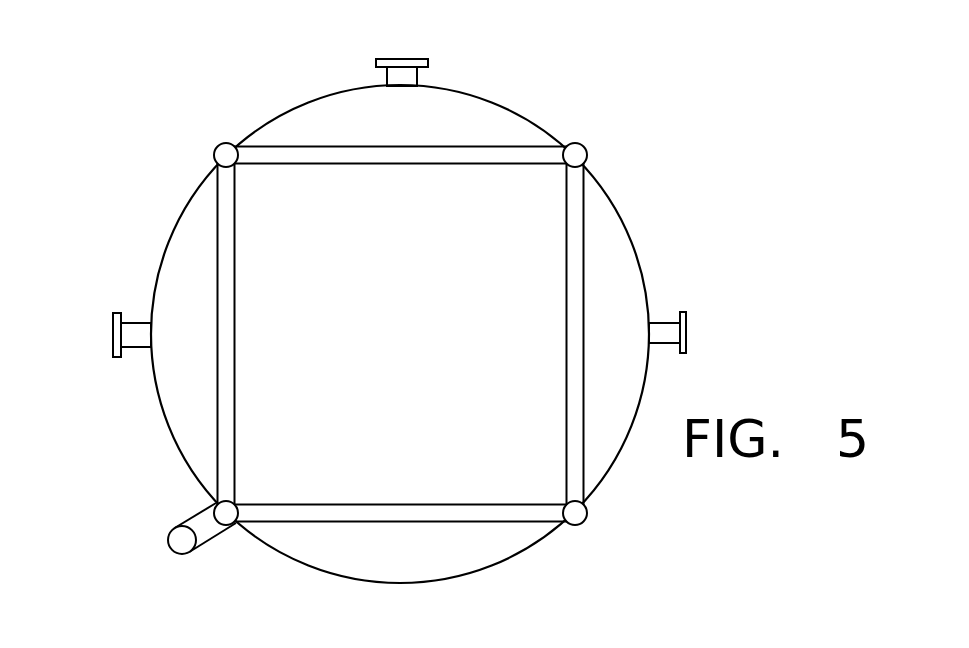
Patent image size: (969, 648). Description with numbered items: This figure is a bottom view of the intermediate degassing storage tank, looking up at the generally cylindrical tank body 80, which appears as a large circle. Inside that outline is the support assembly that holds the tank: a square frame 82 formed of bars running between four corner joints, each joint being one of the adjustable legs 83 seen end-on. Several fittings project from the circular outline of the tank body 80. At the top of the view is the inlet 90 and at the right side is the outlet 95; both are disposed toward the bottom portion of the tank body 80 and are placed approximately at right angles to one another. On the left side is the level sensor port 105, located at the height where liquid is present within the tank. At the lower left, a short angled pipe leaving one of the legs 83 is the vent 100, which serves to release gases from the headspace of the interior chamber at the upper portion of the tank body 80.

The tank body 80 is at (500, 104).
The frame 82 is at (402, 164).
The adjustable legs 83 is at (223, 142).
The inlet 90 is at (402, 58).
The outlet 95 is at (686, 332).
The vent 100 is at (165, 547).
The level sensor port 105 is at (113, 332).